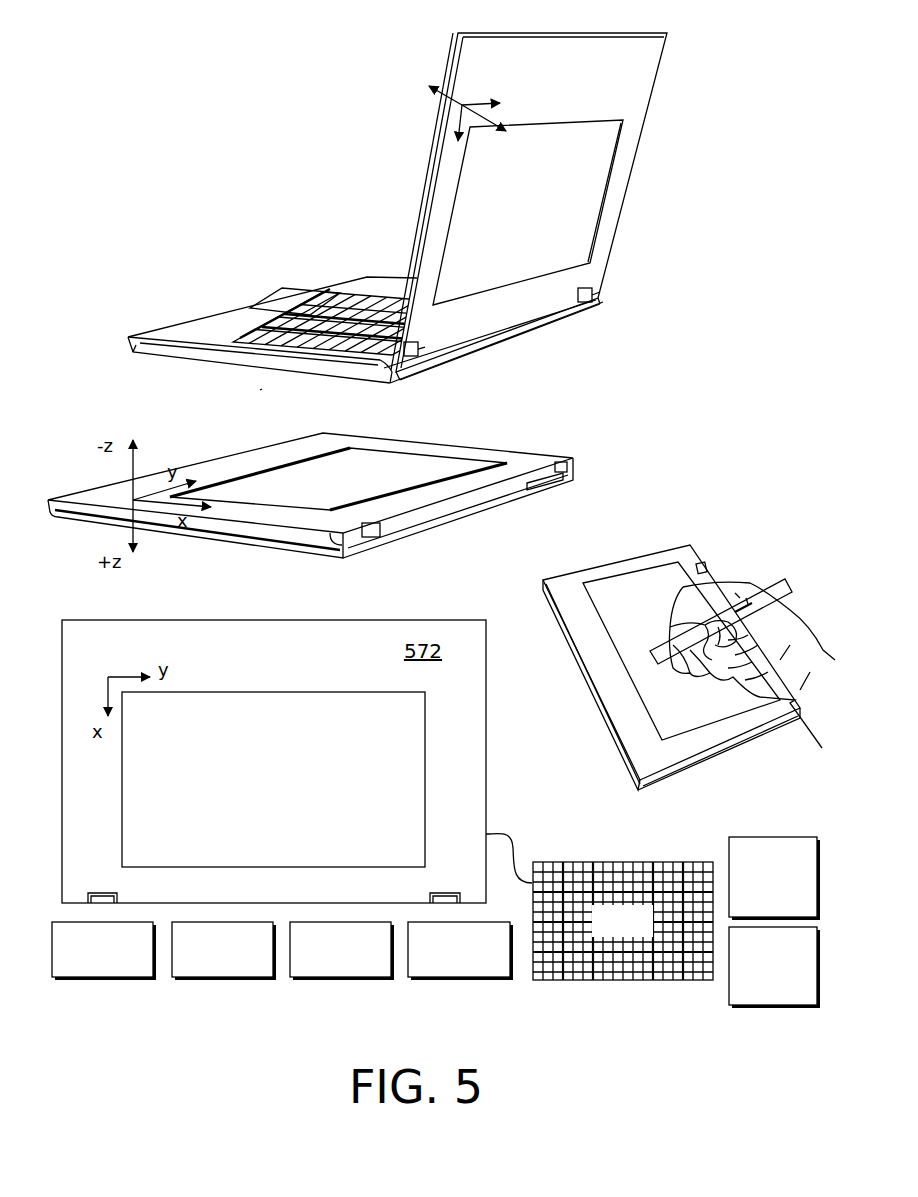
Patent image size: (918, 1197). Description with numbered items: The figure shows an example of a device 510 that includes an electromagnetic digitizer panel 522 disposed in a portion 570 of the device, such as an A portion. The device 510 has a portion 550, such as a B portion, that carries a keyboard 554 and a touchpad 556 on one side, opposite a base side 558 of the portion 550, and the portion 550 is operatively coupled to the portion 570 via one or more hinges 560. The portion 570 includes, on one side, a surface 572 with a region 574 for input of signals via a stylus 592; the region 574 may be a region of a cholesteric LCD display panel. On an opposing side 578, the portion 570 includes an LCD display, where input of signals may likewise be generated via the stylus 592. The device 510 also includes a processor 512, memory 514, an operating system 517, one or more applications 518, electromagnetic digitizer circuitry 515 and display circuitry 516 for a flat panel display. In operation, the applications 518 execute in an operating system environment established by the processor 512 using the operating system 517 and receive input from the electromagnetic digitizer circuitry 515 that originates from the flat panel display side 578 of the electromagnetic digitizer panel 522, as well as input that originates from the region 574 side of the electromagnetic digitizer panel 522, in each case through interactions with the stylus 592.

The device 510 is at (258, 117).
The opposing side 578 is at (410, 156).
The surface 572 is at (640, 93).
The portion 570 is at (628, 178).
The region 574 is at (575, 212).
The hinges 560 is at (590, 336).
The keyboard 554 is at (372, 328).
The touchpad 556 is at (300, 306).
The portion 550 is at (200, 325).
The base side 558 is at (263, 388).
The stylus 592 is at (770, 588).
The electromagnetic digitizer panel 522 is at (623, 921).
The processor 512 is at (104, 951).
The memory 514 is at (224, 951).
The operating system 517 is at (342, 951).
The applications 518 is at (460, 951).
The electromagnetic digitizer circuitry 515 is at (774, 878).
The display circuitry 516 is at (774, 967).